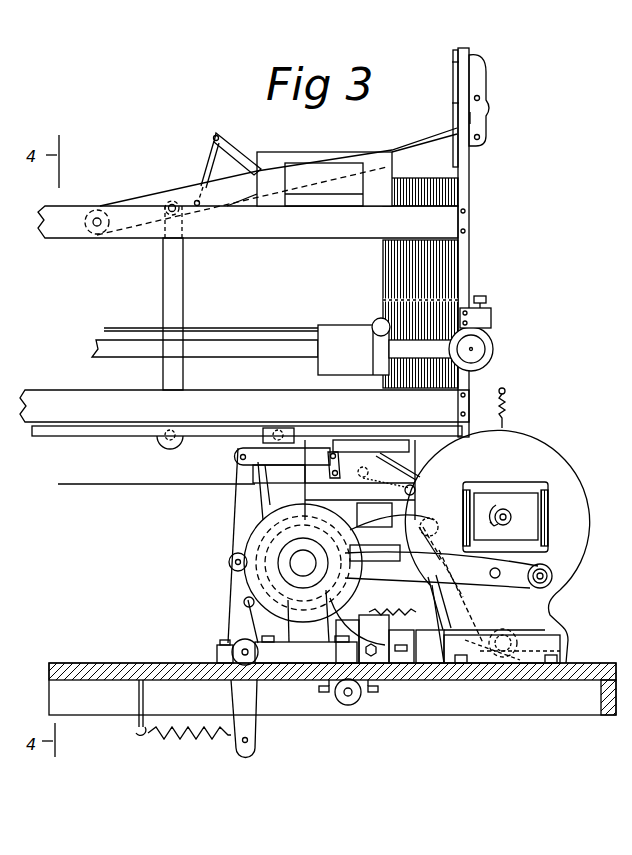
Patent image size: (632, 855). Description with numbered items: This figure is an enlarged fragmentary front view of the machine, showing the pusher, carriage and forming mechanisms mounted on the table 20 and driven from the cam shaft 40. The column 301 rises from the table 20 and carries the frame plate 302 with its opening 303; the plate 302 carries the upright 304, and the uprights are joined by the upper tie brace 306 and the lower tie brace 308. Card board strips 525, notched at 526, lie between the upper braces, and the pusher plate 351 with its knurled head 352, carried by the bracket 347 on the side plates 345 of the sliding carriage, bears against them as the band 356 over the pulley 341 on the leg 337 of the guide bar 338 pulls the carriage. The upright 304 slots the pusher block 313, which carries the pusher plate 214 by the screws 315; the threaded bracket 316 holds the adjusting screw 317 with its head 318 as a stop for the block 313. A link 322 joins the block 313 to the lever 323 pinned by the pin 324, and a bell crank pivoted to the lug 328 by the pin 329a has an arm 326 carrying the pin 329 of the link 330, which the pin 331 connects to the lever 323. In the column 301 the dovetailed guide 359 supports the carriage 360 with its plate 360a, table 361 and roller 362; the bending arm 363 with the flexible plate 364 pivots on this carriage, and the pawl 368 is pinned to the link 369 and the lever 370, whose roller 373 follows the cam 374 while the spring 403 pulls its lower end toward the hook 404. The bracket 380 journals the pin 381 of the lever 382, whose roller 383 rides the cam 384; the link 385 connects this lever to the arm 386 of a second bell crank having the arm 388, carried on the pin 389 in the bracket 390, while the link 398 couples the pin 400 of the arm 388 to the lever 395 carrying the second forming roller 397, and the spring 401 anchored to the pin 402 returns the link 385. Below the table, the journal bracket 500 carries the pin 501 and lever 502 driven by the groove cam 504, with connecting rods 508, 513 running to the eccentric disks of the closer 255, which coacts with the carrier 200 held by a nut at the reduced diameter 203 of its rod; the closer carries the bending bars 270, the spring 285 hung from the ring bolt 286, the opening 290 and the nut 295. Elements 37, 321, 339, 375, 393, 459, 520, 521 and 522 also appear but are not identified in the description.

The table 20 is at (105, 657).
The stand 37 is at (306, 649).
The cam shaft 40 is at (303, 563).
The rectangular carrier 200 is at (524, 507).
The reduced diameter 203 is at (509, 520).
The pusher plate 214 is at (455, 127).
The closer 255 is at (561, 441).
The bending bars 270 is at (523, 474).
The spring 285 is at (504, 404).
The ring bolt 286 is at (503, 421).
The opening 290 is at (549, 569).
The nut 295 is at (556, 589).
The column 301 is at (374, 513).
The frame plate 302 is at (120, 437).
The opening 303 is at (454, 417).
The upright 304 is at (483, 242).
The upper tie brace 306 is at (248, 222).
The lower tie brace 308 is at (244, 406).
The pusher block 313 is at (473, 72).
The screws 315 is at (456, 64).
The threaded bracket 316 is at (492, 318).
The adjusting screw 317 is at (491, 308).
The head 318 is at (482, 295).
The link 321 is at (270, 486).
The link 322 is at (478, 118).
The lever 323 is at (180, 192).
The pin 324 is at (97, 210).
The arm 326 is at (196, 449).
The lug 328 is at (319, 427).
The pin 329 is at (167, 444).
The pin 329a is at (281, 428).
The link 330 is at (163, 308).
The pin 331 is at (168, 214).
The leg 337 is at (443, 523).
The guide bar 338 is at (205, 348).
The block 339 is at (428, 624).
The pulley 341 is at (494, 350).
The side plates 345 is at (353, 350).
The bracket 347 is at (373, 354).
The pusher plate 351 is at (384, 268).
The knurled head 352 is at (371, 321).
The band 356 is at (199, 327).
The dovetailed guide 359 is at (408, 462).
The carriage 360 is at (279, 474).
The plate 360a is at (418, 478).
The table 361 is at (350, 490).
The roller 362 is at (428, 525).
The bending arm 363 is at (360, 480).
The flexible plate 364 is at (391, 470).
The pawl 368 is at (348, 465).
The link 369 is at (283, 456).
The lever 370 is at (238, 514).
The roller 373 is at (229, 561).
The cam 374 is at (309, 550).
The block 375 is at (388, 490).
The bracket 380 is at (214, 651).
The pin 381 is at (243, 657).
The lever 382 is at (240, 618).
The roller 383 is at (257, 576).
The cam 384 is at (303, 563).
The link 385 is at (420, 598).
The arm 386 is at (476, 605).
The second arm 388 is at (466, 640).
The pin 389 is at (503, 660).
The bracket 390 is at (524, 652).
The slide 393 is at (375, 553).
The lever 395 is at (441, 570).
The second forming roller 397 is at (500, 572).
The link 398 is at (426, 591).
The pin 400 is at (545, 630).
The spring 401 is at (374, 639).
The pin 402 is at (424, 681).
The spring 403 is at (189, 745).
The hook 404 is at (136, 737).
The rod 459 is at (153, 475).
The journal bracket 500 is at (342, 703).
The pin 501 is at (354, 702).
The lever 502 is at (348, 641).
The groove cam 504 is at (322, 571).
The connecting rod 508 is at (392, 529).
The connecting rod 513 is at (364, 595).
The box 520 is at (314, 156).
The bracket 521 is at (238, 154).
The arm 522 is at (213, 147).
The card board strips 525 is at (421, 181).
The notches 526 is at (384, 242).